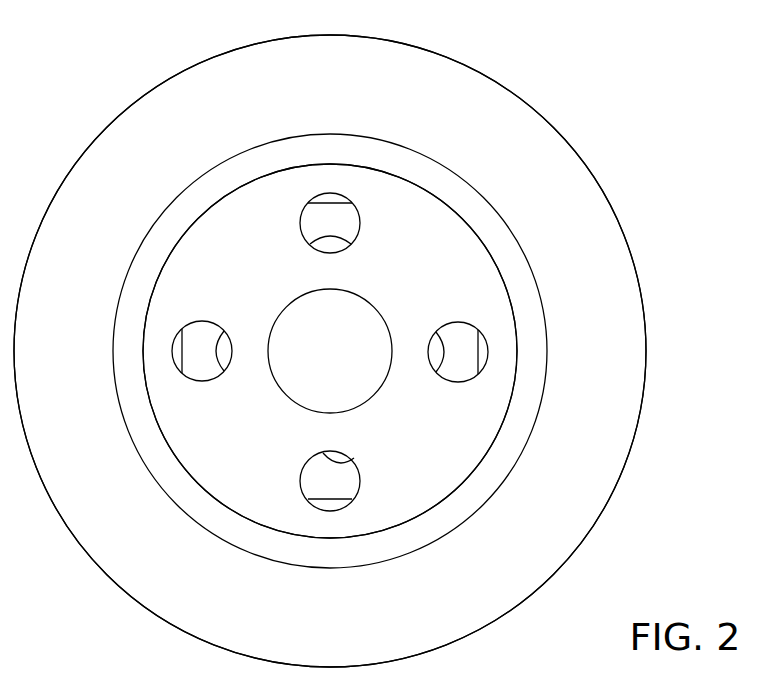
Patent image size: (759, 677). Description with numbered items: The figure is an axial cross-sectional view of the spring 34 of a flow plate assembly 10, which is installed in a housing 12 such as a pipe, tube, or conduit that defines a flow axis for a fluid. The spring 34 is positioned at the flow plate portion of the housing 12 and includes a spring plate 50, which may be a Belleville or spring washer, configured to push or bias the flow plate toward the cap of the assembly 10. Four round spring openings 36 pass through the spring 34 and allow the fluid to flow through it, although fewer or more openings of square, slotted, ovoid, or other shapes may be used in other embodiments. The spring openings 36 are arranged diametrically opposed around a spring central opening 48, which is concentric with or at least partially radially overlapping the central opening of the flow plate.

The flow plate assembly 10 is at (602, 72).
The housing 12 is at (643, 307).
The spring 34 is at (393, 485).
The spring openings 36 is at (312, 245).
The spring central opening 48 is at (292, 398).
The spring plate 50 is at (428, 270).